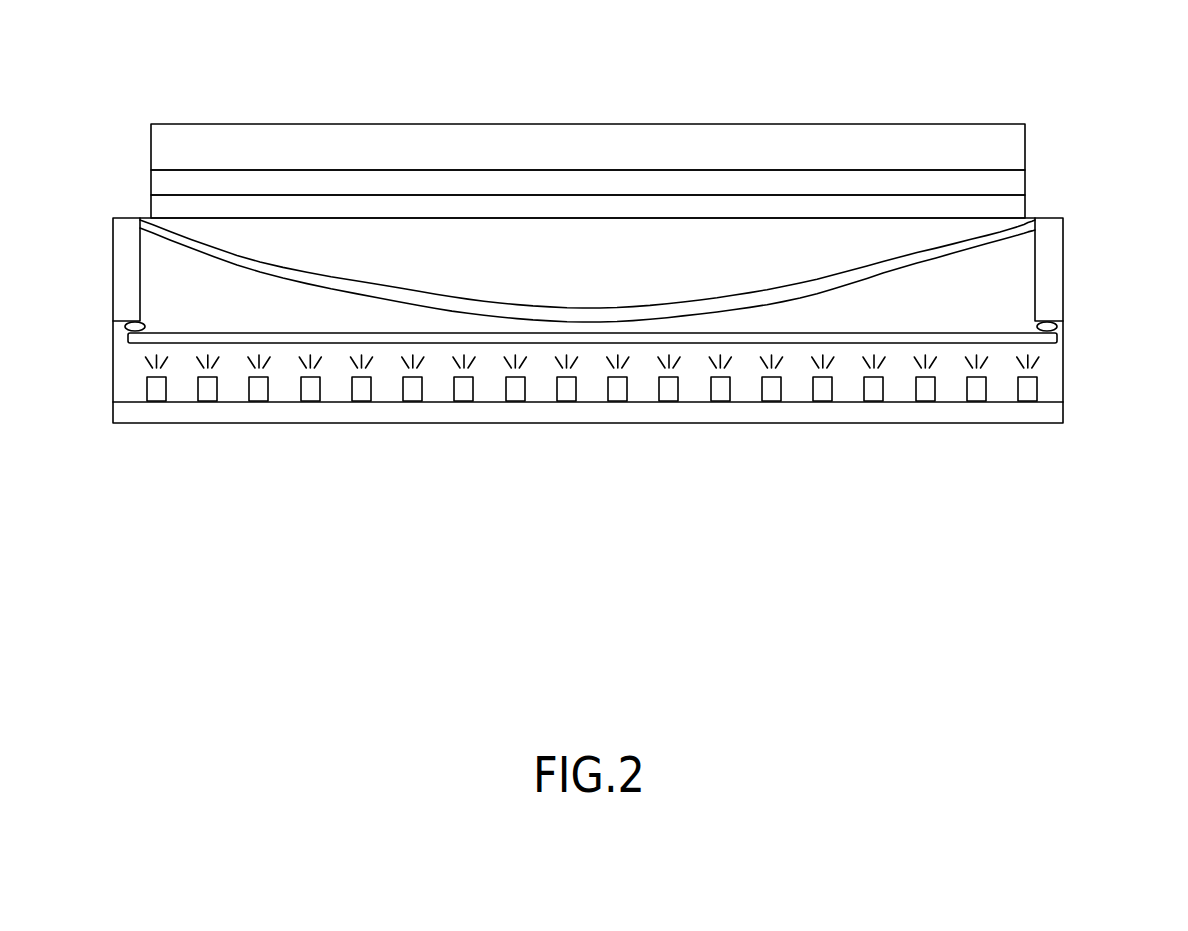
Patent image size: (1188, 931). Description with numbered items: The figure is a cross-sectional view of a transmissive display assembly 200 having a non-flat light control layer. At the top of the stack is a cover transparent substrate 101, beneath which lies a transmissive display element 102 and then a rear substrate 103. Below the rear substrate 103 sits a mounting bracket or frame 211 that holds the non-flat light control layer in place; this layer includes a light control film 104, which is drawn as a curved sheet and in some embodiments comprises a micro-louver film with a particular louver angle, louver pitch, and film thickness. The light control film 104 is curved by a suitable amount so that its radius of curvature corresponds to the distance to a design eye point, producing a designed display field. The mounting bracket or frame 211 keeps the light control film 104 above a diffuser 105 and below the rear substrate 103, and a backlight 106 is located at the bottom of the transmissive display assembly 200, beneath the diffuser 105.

The transmissive display assembly 200 is at (252, 95).
The cover transparent substrate 101 is at (1025, 143).
The transmissive display element 102 is at (1025, 183).
The rear substrate 103 is at (1025, 215).
The light control film 104 is at (875, 275).
The diffuser 105 is at (1052, 337).
The backlight 106 is at (982, 412).
The mounting bracket or frame 211 is at (127, 277).